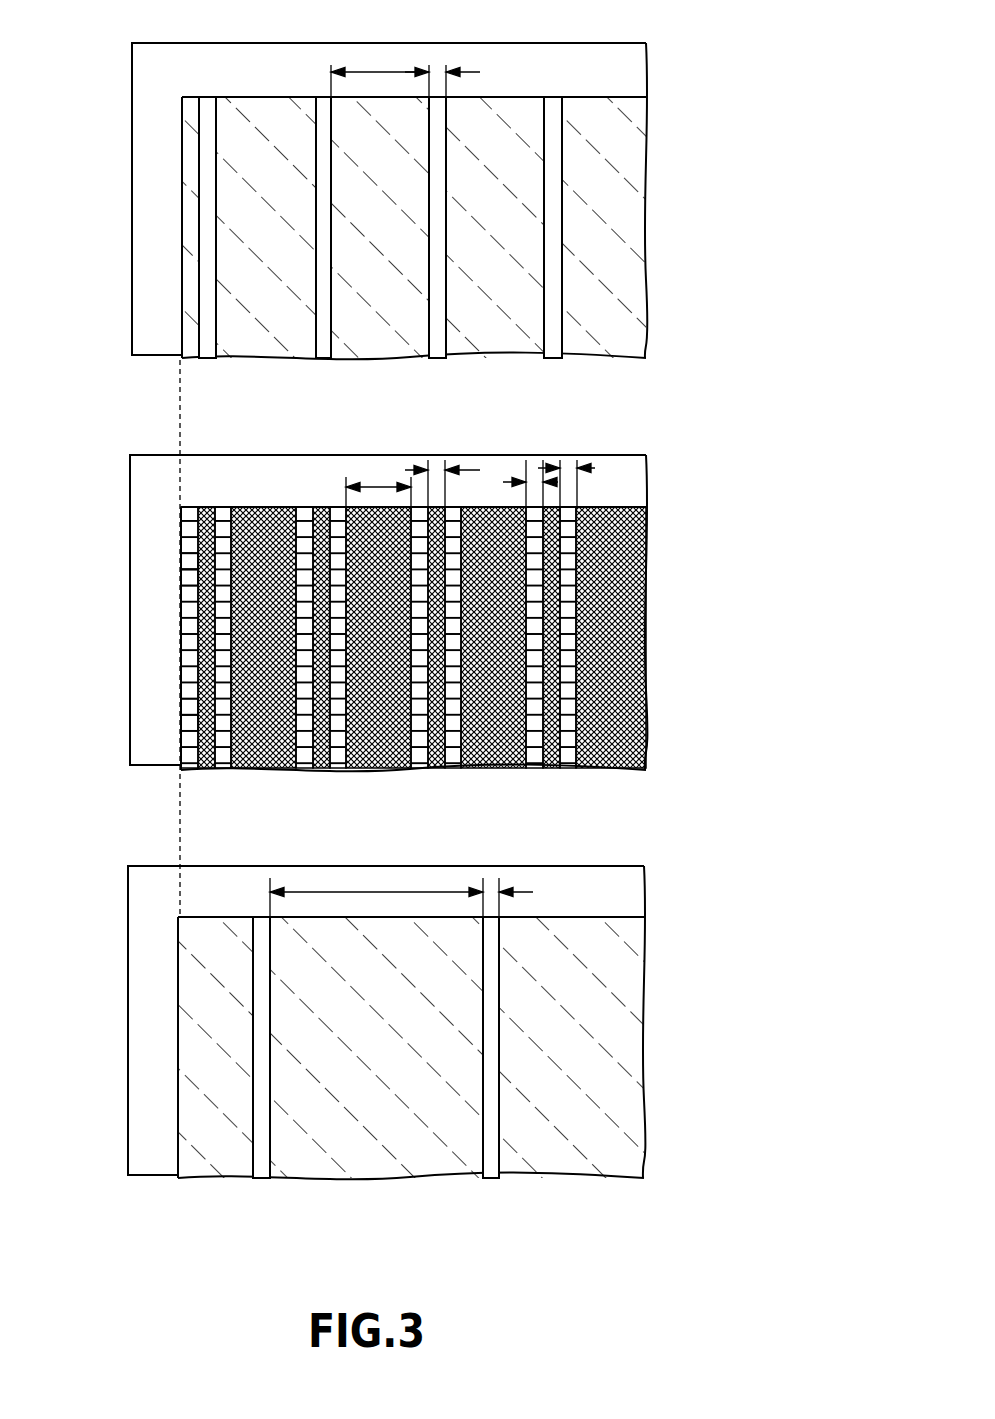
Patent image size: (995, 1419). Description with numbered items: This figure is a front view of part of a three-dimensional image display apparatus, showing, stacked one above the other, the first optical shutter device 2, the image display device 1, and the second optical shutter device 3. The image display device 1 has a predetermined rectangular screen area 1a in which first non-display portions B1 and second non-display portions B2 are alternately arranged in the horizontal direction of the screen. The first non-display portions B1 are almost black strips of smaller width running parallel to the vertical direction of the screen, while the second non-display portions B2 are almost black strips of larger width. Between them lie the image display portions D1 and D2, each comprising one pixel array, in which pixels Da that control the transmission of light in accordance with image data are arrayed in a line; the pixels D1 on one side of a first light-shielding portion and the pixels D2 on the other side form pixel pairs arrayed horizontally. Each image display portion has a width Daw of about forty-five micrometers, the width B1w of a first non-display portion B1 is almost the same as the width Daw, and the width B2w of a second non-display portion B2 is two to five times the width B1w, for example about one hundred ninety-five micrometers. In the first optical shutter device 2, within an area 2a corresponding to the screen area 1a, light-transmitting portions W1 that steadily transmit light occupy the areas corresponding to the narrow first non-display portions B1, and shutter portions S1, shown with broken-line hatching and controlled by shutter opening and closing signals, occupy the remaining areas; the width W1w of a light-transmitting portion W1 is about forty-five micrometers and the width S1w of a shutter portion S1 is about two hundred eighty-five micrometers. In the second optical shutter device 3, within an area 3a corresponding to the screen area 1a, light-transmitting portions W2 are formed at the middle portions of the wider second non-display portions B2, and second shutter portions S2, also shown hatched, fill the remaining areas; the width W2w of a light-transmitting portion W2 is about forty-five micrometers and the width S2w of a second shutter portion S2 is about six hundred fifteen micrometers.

The image display device 1 is at (128, 474).
The screen area 1a is at (178, 657).
The first optical shutter device 2 is at (130, 62).
The area corresponding to the screen area 2a is at (180, 218).
The second optical shutter device 3 is at (128, 892).
The area corresponding to the screen area 3a is at (178, 1005).
The light-transmitting portion W1 is at (207, 340).
The shutter portion S1 is at (190, 337).
The width of the shutter portion S1w is at (381, 70).
The width of the light-transmitting portion W1w is at (437, 66).
The first non-display portion B1 is at (207, 506).
The second non-display portion B2 is at (262, 506).
The width of the first non-display portion B1w is at (437, 468).
The width of the second non-display portion B2w is at (376, 485).
The image display portion D1 is at (188, 770).
The image display portion D2 is at (222, 770).
The pixel Da is at (190, 578).
The width of the image display portion Daw is at (533, 480).
The light-transmitting portion W2 is at (262, 1172).
The second shutter portion S2 is at (210, 1165).
The width of the second shutter portion S2w is at (383, 890).
The width of the light-transmitting portion W2w is at (490, 877).